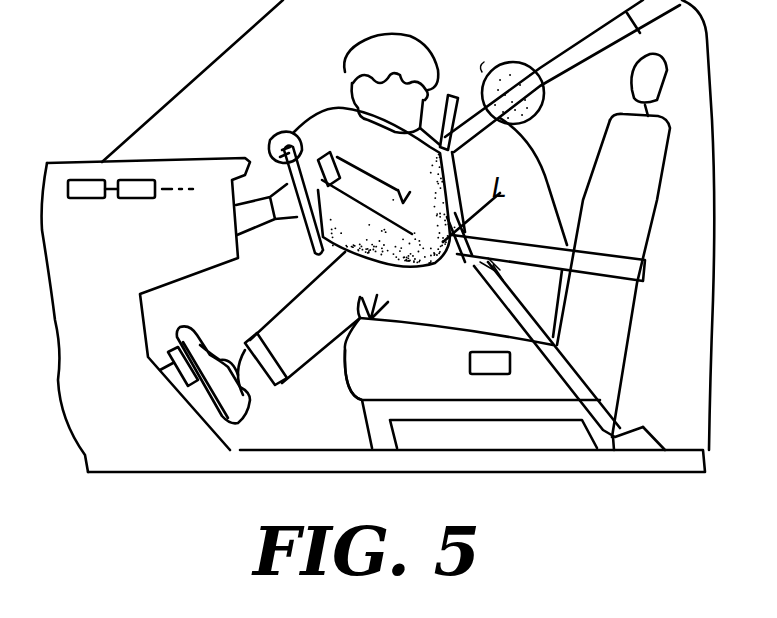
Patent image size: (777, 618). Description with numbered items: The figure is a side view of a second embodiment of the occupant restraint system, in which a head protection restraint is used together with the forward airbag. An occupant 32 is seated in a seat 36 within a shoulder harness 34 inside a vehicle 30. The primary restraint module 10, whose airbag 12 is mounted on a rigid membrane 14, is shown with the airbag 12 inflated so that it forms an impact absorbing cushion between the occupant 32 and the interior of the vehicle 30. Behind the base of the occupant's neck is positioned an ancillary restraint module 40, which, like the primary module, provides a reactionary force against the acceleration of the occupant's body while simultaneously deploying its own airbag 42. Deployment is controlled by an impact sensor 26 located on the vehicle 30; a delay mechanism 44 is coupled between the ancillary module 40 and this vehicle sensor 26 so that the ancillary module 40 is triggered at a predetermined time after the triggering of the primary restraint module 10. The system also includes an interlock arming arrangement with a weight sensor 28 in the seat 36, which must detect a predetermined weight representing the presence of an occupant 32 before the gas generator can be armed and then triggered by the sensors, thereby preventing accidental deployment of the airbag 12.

The restraint module 10 is at (465, 270).
The airbag 12 is at (322, 122).
The rigid membrane 14 is at (648, 265).
The impact sensor 26 is at (90, 193).
The weight sensor 28 is at (470, 362).
The vehicle 30 is at (157, 440).
The occupant 32 is at (409, 35).
The shoulder harness 34 is at (550, 67).
The seat 36 is at (612, 325).
The ancillary restraint module 40 is at (480, 74).
The airbag 42 is at (538, 118).
The delay mechanism 44 is at (143, 193).